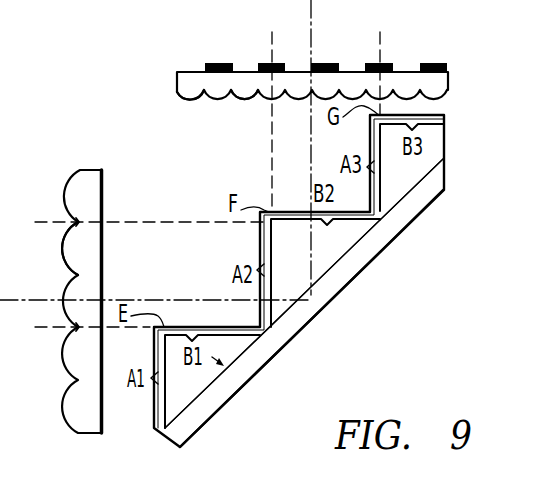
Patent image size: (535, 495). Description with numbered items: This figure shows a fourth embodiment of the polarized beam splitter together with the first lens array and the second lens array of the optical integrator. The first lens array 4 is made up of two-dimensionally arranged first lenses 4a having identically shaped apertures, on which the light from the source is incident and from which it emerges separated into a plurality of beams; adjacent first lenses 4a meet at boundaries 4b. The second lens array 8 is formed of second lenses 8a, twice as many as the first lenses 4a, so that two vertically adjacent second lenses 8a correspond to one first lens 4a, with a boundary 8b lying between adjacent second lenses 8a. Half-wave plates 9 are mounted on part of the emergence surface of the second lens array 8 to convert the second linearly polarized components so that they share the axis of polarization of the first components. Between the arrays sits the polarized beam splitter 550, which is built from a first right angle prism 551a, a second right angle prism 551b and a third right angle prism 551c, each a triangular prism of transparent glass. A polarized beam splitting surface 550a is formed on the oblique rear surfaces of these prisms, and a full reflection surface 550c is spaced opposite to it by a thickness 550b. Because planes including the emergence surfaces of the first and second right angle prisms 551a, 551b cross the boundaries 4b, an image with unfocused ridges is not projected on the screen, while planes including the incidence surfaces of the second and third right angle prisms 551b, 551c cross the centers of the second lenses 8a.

The first lens array 4 is at (90, 168).
The first lenses 4a is at (62, 250).
The boundaries 4b is at (76, 221).
The second lens array 8 is at (450, 80).
The second lenses 8a is at (193, 99).
The boundary 8b is at (257, 97).
The half-wave plates 9 is at (391, 62).
The polarized beam splitter 550 is at (329, 346).
The polarized beam splitting surface 550a is at (416, 191).
The thickness 550b is at (245, 389).
The full reflection surface 550c is at (392, 245).
The first right angle prism 551a is at (195, 392).
The second right angle prism 551b is at (322, 262).
The third right angle prism 551c is at (438, 143).